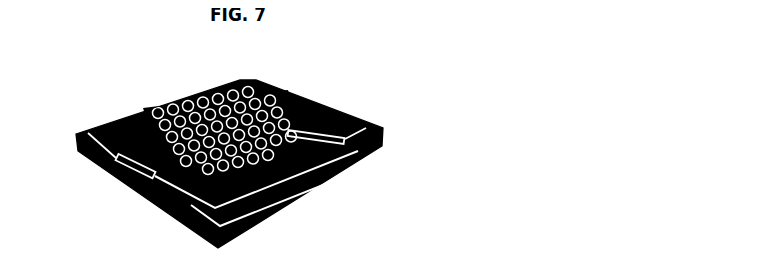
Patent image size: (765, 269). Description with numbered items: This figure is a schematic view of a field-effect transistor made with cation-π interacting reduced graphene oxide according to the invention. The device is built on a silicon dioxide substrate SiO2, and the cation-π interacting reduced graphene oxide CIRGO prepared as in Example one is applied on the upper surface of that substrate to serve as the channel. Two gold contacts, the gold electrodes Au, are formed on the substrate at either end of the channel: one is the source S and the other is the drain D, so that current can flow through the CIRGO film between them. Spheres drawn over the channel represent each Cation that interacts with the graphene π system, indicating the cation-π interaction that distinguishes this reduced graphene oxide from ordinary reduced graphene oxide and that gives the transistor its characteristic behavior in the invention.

The SiO2 substrate SiO2 is at (337, 160).
The cation-π interacting reduced graphene oxide CIRGO is at (288, 191).
The Au electrode Au is at (196, 178).
The source S is at (131, 153).
The drain D is at (323, 118).
The cation Cation is at (293, 127).